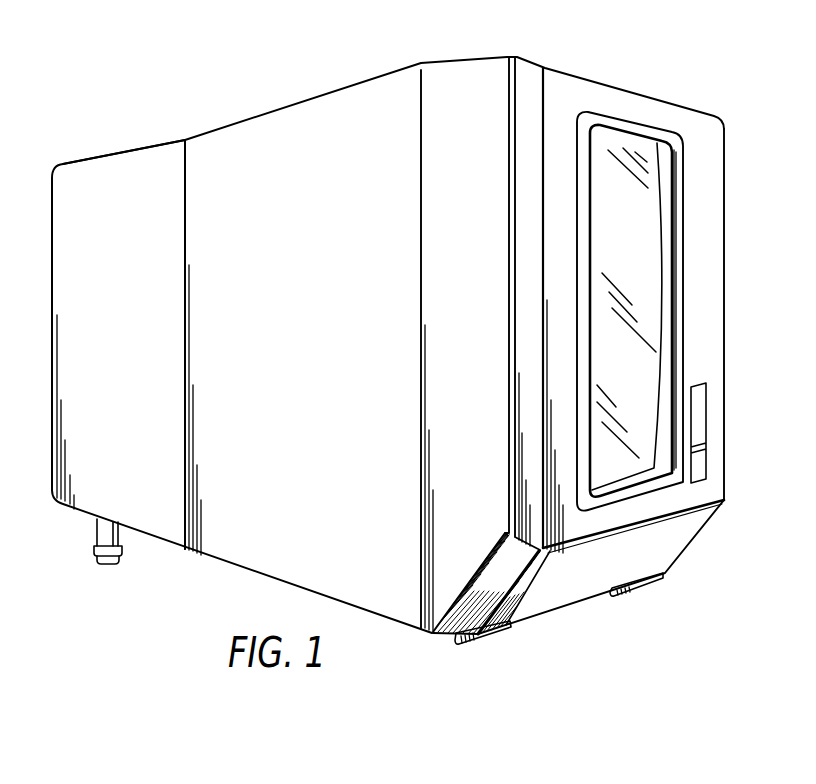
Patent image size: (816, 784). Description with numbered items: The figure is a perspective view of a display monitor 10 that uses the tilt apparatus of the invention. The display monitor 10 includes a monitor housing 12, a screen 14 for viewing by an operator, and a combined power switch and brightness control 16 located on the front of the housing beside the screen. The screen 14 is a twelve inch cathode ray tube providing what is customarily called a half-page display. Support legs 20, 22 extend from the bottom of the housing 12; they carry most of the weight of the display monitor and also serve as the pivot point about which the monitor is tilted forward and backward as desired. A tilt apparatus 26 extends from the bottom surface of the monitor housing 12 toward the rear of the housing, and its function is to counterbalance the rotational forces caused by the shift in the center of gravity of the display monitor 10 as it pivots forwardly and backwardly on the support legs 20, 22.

The display monitor 10 is at (298, 62).
The monitor housing 12 is at (208, 128).
The screen 14 is at (632, 152).
The combined power switch and brightness control 16 is at (706, 467).
The support leg 20 is at (505, 634).
The support leg 22 is at (647, 585).
The tilt apparatus 26 is at (126, 549).